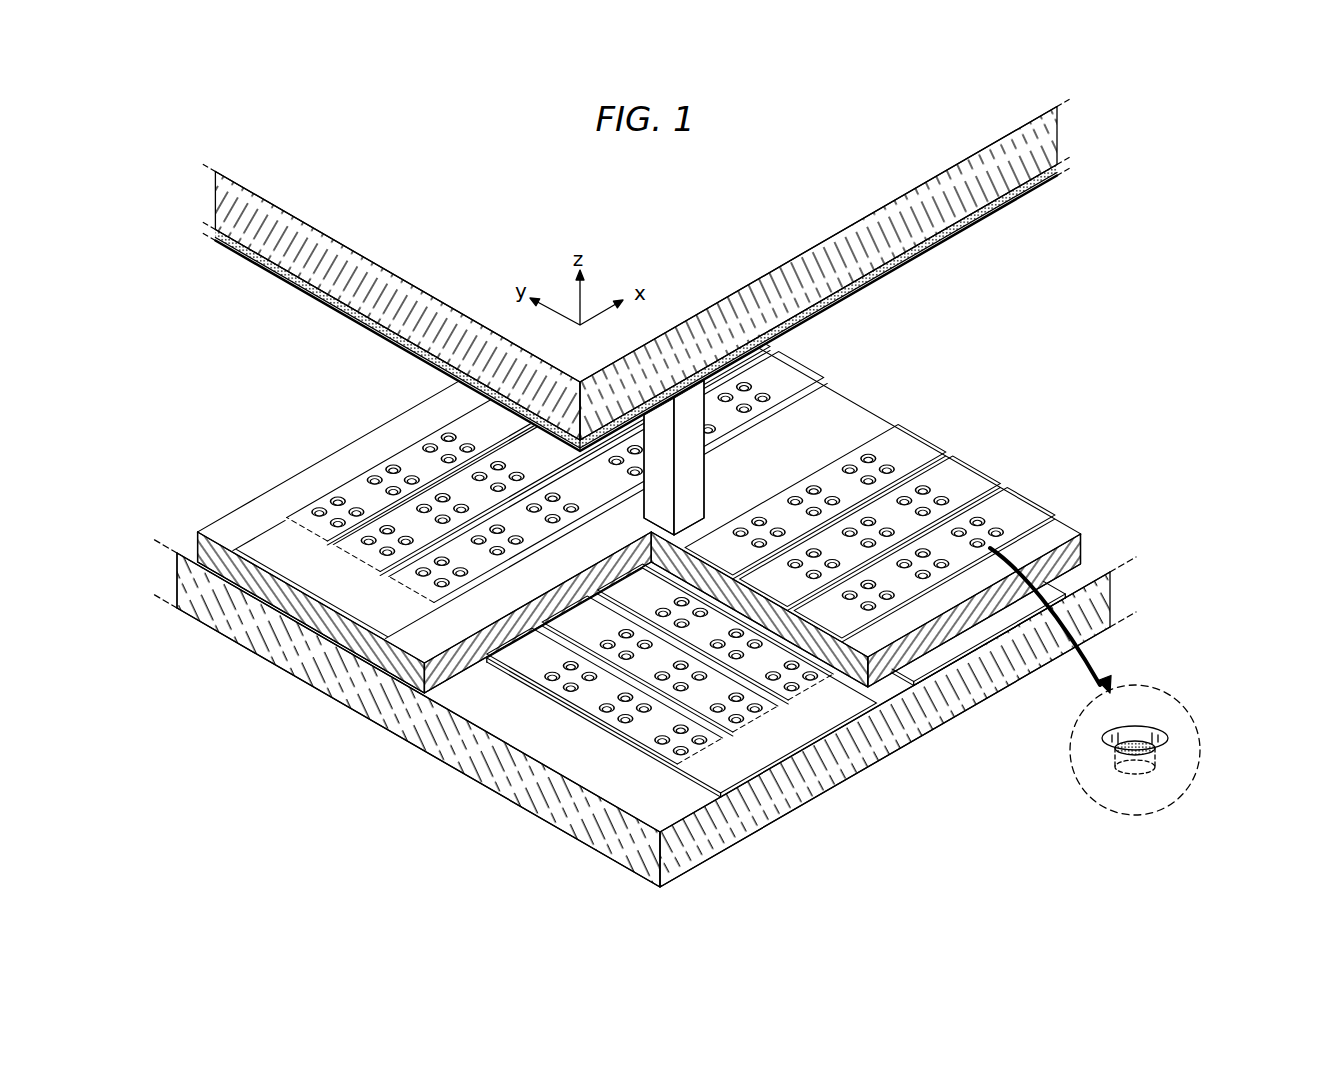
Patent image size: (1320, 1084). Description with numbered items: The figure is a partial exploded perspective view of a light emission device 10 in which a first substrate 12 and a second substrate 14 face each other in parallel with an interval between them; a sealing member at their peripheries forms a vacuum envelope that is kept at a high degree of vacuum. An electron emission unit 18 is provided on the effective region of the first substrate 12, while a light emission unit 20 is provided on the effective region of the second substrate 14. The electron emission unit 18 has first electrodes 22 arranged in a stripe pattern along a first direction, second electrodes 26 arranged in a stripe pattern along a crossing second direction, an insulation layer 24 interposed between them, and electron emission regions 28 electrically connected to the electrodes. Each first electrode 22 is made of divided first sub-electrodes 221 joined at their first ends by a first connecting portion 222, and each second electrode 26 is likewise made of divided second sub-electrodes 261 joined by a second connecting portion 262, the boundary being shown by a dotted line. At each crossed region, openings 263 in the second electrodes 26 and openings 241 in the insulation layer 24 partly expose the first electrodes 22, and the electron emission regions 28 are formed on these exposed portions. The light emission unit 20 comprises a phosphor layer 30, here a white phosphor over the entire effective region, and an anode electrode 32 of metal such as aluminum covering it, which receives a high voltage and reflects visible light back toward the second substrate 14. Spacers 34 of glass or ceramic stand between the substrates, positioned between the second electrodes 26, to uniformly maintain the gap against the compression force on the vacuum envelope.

The light emission device 10 is at (636, 274).
The first substrate 12 is at (573, 815).
The second substrate 14 is at (300, 283).
The electron emission unit 18 is at (666, 578).
The light emission unit 20 is at (636, 308).
The first electrodes 22 is at (692, 722).
The insulation layer 24 is at (1078, 556).
The second electrodes 26 is at (533, 484).
The electron emission regions 28 is at (1130, 681).
The phosphor layer 30 is at (918, 248).
The anode electrode 32 is at (958, 234).
The spacers 34 is at (695, 465).
The first sub-electrodes 221 is at (753, 665).
The first connecting portion 222 is at (807, 722).
The openings of the insulation layer 241 is at (1165, 722).
The second sub-electrodes 261 is at (467, 562).
The second connecting portion 262 is at (287, 545).
The openings of the second electrodes 263 is at (1134, 722).